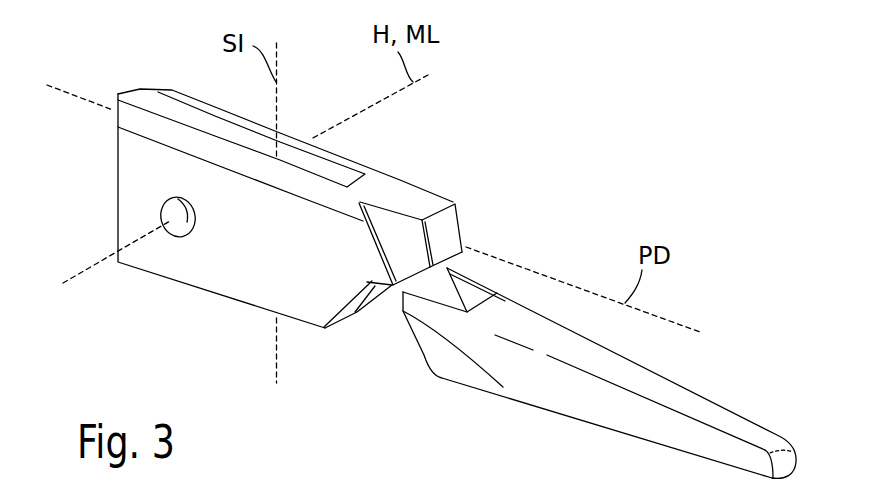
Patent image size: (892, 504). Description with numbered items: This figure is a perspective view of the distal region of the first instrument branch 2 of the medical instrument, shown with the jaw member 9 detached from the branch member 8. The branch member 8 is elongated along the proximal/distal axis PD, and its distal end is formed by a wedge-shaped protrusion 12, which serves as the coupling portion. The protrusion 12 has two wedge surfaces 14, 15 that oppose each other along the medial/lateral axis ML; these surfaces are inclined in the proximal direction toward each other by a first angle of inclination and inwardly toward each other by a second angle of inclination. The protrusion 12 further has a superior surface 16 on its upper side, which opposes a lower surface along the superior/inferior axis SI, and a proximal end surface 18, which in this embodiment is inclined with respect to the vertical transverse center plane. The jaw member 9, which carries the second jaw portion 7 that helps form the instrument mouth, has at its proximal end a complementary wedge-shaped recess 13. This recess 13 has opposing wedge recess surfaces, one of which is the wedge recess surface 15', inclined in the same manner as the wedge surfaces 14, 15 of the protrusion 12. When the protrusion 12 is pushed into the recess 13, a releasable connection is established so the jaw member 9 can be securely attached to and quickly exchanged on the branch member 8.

The first instrument branch 2 is at (618, 122).
The second jaw portion 7 is at (382, 244).
The branch member 8 is at (208, 272).
The jaw member 9 is at (620, 407).
The wedge-shaped protrusion 12 is at (442, 178).
The wedge-shaped recess 13 is at (485, 276).
The wedge surface 14 is at (412, 259).
The wedge surface 15 is at (461, 191).
The wedge recess surface 15' is at (425, 359).
The superior surface 16 is at (420, 203).
The proximal end surface 18 is at (445, 240).